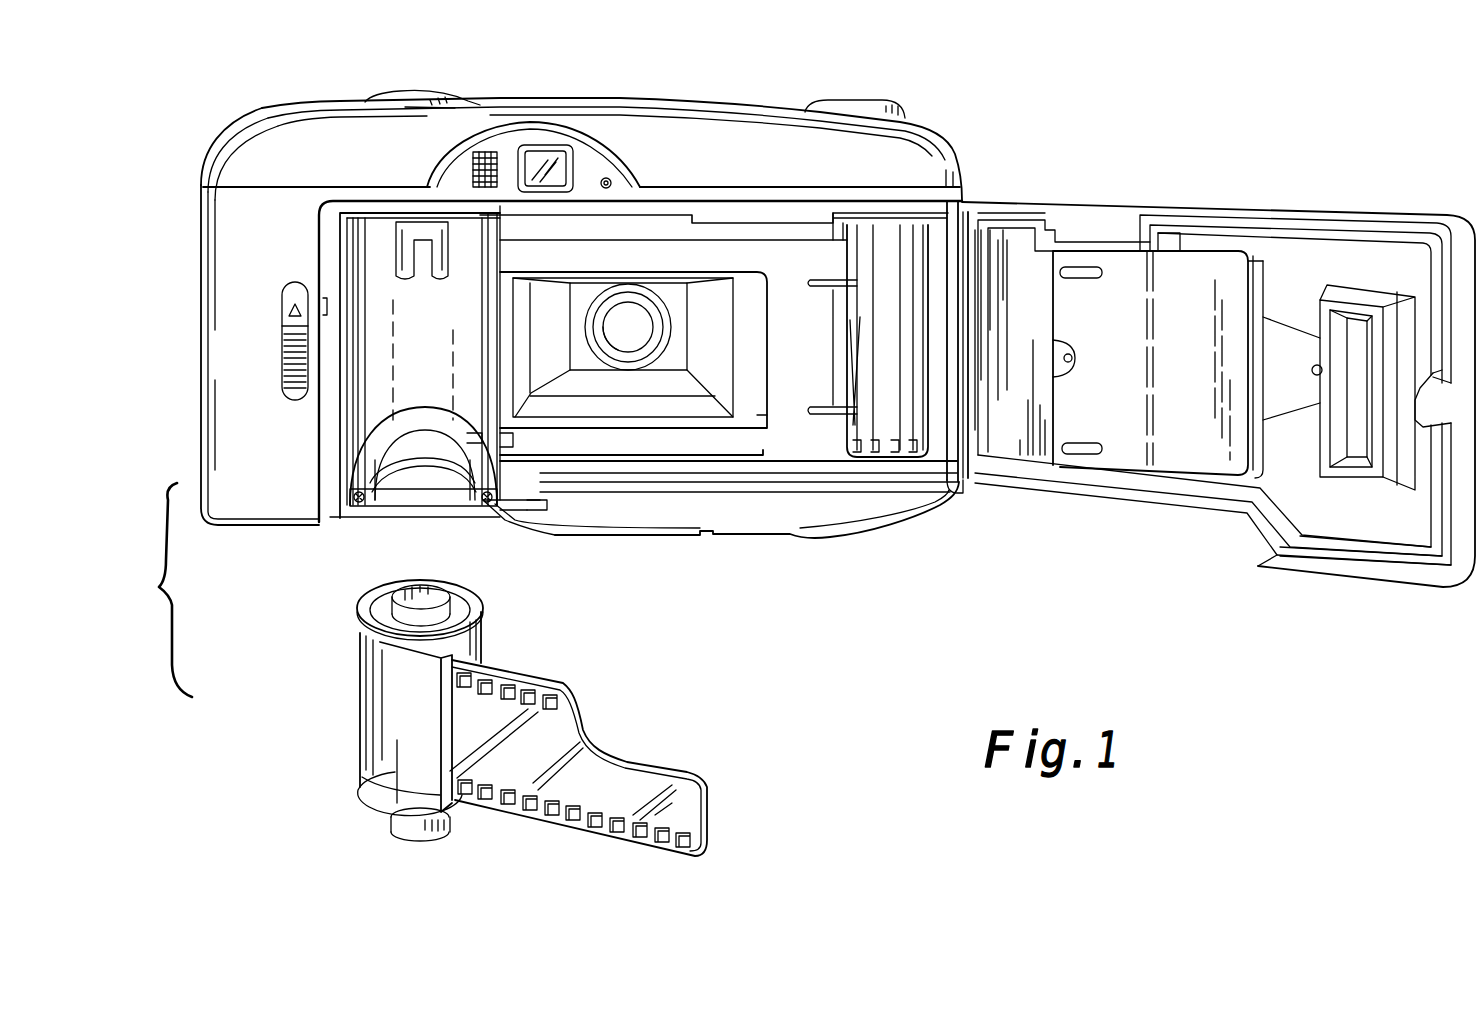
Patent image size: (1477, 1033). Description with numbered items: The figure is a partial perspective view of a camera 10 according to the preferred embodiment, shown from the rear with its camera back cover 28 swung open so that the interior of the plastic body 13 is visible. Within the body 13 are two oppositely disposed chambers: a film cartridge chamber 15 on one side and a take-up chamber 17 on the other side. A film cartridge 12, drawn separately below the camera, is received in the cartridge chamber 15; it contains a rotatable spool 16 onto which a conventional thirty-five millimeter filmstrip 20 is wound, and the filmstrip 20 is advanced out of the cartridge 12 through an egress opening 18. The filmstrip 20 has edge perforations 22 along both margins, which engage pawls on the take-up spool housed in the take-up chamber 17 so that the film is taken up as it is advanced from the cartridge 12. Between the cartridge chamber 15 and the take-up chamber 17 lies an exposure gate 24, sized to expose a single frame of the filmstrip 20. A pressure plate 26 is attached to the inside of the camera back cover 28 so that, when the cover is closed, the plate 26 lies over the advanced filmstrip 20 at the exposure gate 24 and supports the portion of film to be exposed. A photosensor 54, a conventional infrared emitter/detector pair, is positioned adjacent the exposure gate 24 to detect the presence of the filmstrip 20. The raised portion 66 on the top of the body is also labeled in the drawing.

The camera 10 is at (197, 260).
The film cartridge 12 is at (393, 707).
The plastic body 13 is at (212, 146).
The film cartridge chamber 15 is at (363, 407).
The rotatable spool 16 is at (382, 585).
The take-up chamber 17 is at (938, 450).
The egress opening 18 is at (453, 800).
The filmstrip 20 is at (607, 767).
The edge perforations 22 is at (552, 698).
The exposure gate 24 is at (752, 418).
The pressure plate 26 is at (1167, 460).
The camera back cover 28 is at (1424, 588).
The photosensor 54 is at (537, 482).
The raised portion of top cover 66 is at (447, 92).